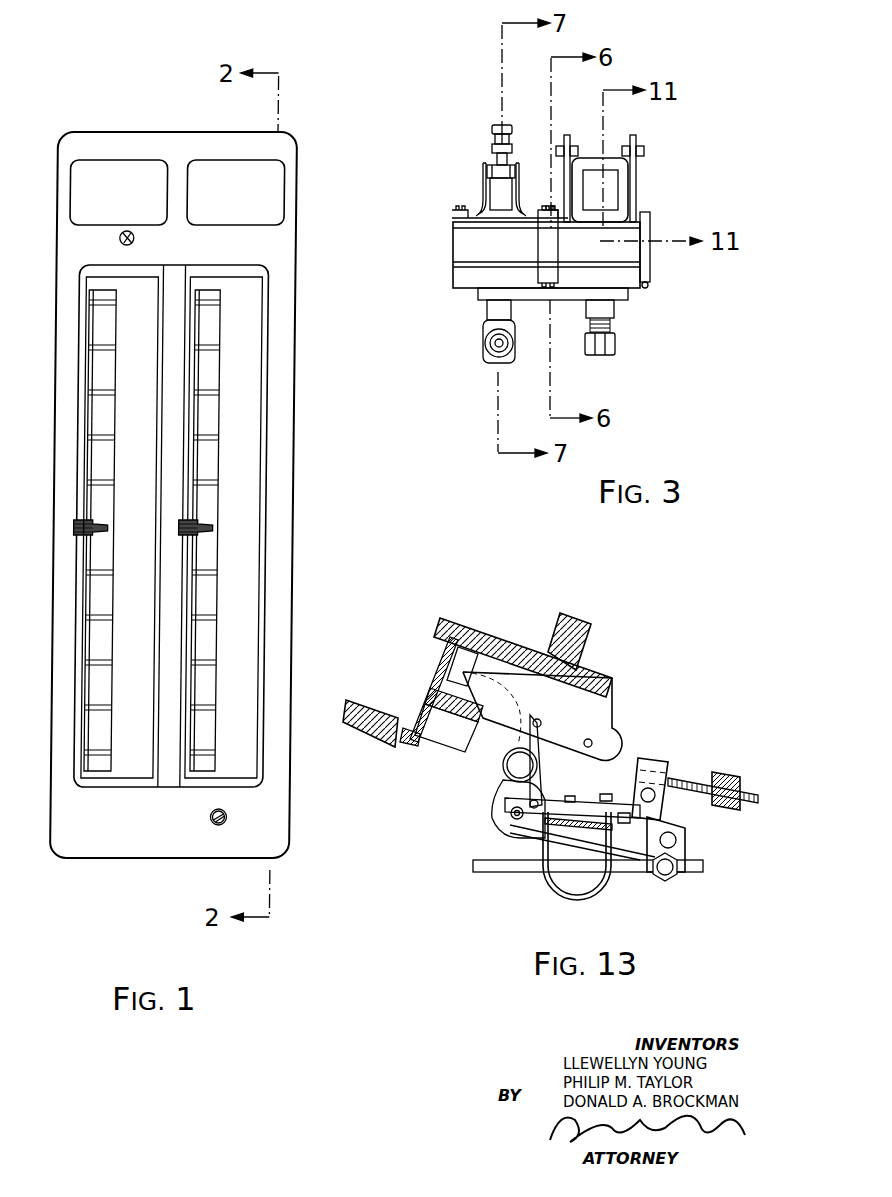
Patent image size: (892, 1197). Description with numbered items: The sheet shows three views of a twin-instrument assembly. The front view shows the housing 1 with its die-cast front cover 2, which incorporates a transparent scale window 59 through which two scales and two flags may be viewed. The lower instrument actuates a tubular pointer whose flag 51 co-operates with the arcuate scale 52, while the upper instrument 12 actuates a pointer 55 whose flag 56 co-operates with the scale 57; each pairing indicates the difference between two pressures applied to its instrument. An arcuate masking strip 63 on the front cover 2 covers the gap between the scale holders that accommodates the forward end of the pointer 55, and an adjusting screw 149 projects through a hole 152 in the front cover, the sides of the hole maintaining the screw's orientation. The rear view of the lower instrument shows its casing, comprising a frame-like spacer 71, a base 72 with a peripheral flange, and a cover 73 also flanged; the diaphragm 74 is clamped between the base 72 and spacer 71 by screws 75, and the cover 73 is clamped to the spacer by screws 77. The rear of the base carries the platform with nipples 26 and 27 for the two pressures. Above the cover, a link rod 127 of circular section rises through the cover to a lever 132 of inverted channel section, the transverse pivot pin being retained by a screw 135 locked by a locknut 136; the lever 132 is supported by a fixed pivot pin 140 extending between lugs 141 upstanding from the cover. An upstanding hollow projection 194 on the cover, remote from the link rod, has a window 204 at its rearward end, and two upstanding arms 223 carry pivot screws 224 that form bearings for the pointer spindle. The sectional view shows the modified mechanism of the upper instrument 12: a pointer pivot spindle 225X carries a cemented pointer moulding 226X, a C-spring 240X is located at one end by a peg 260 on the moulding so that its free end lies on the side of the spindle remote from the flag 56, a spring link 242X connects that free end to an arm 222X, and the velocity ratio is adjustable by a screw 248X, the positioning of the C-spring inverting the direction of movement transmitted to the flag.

In FIG. 1, the housing 1 is at (334, 456).
In FIG. 1, the front cover 2 is at (291, 808).
In FIG. 1, the flag 51 is at (84, 521).
In FIG. 1, the scale 52 is at (124, 546).
In FIG. 1, the flag 56 is at (210, 533).
In FIG. 1, the scale 57 is at (219, 358).
In FIG. 1, the transparent scale window 59 is at (247, 614).
In FIG. 1, the arcuate masking strip 63 is at (177, 284).
In FIG. 1, the adjusting screw 149 is at (220, 821).
In FIG. 1, the hole 152 is at (218, 817).
In FIG. 3, the nipple 26 is at (484, 345).
In FIG. 3, the nipple 27 is at (616, 344).
In FIG. 3, the spacer 71 is at (648, 258).
In FIG. 3, the base 72 is at (630, 295).
In FIG. 3, the cover 73 is at (650, 224).
In FIG. 3, the diaphragm 74 is at (648, 273).
In FIG. 3, the screws 75 is at (650, 290).
In FIG. 3, the screws 77 is at (645, 208).
In FIG. 3, the link rod 127 is at (492, 149).
In FIG. 3, the lever 132 is at (508, 167).
In FIG. 3, the screw 135 is at (498, 125).
In FIG. 3, the locknut 136 is at (496, 138).
In FIG. 3, the fixed pivot pin 140 is at (495, 185).
In FIG. 3, the lugs 141 is at (486, 180).
In FIG. 3, the hollow projection 194 is at (610, 156).
In FIG. 3, the window 204 is at (600, 190).
In FIG. 3, the upstanding arms 223 is at (566, 150).
In FIG. 3, the pivot screws 224 is at (574, 148).
In FIG. 13, the upper instrument 12 is at (366, 708).
In FIG. 13, the pointer 55 is at (518, 873).
In FIG. 13, the arm 222X is at (602, 737).
In FIG. 13, the pointer pivot spindle 225X is at (510, 818).
In FIG. 13, the pointer moulding 226X is at (687, 843).
In FIG. 13, the C-spring 240X is at (604, 890).
In FIG. 13, the spring link 242X is at (503, 768).
In FIG. 13, the screw 248X is at (594, 818).
In FIG. 13, the peg 260 is at (652, 824).